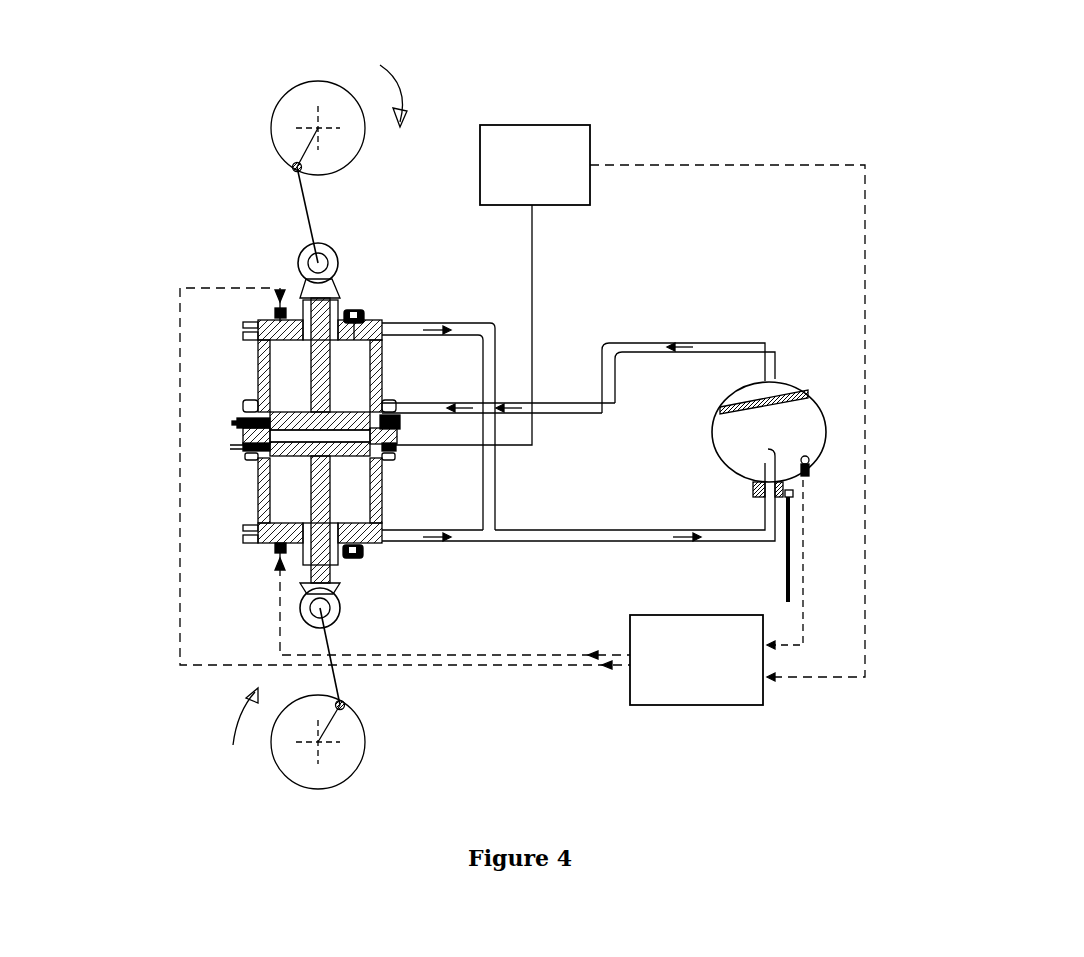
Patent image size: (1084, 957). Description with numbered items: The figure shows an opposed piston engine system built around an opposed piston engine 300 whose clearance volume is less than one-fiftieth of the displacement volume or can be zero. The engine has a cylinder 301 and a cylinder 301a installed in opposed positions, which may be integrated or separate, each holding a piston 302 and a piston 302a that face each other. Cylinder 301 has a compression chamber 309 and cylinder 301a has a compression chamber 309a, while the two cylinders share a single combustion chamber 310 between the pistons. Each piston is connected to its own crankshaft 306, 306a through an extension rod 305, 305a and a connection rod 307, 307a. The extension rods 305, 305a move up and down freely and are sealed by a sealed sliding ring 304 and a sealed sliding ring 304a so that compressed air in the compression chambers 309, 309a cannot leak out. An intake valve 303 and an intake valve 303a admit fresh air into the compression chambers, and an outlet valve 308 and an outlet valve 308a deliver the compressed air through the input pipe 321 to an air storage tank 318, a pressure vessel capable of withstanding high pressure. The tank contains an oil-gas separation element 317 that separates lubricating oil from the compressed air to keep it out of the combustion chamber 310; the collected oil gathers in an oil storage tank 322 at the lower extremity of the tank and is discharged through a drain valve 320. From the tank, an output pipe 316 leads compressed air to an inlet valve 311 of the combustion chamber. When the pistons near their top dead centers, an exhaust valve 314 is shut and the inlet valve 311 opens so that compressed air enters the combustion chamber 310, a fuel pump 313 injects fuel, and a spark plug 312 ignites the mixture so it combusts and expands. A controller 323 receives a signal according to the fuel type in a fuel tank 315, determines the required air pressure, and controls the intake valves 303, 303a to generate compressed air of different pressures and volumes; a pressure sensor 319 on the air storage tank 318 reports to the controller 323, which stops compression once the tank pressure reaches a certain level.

The opposed piston engine 300 is at (205, 230).
The cylinder 301 is at (424, 405).
The cylinder 301a is at (175, 359).
The piston 302 is at (229, 514).
The piston 302a is at (376, 402).
The intake valve 303 is at (185, 600).
The intake valve 303a is at (187, 286).
The sealed sliding ring 304 is at (384, 591).
The sealed sliding ring 304a is at (379, 243).
The extension rod 305 is at (216, 646).
The extension rod 305a is at (233, 204).
The crankshaft 306 is at (363, 738).
The crankshaft 306a is at (363, 104).
The connection rod 307 is at (402, 708).
The connection rod 307a is at (364, 171).
The outlet valve 308 is at (418, 569).
The outlet valve 308a is at (407, 286).
The compression chamber 309 is at (223, 566).
The compression chamber 309a is at (222, 350).
The combustion chamber 310 is at (226, 512).
The inlet valve 311 is at (417, 406).
The spark plug 312 is at (174, 470).
The fuel pump 313 is at (473, 462).
The exhaust valve 314 is at (174, 410).
The fuel tank 315 is at (526, 265).
The output pipe 316 is at (610, 346).
The oil-gas separation element 317 is at (824, 375).
The air storage tank 318 is at (830, 422).
The pressure sensor 319 is at (858, 552).
The drain valve 320 is at (859, 546).
The input pipe 321 is at (578, 515).
The oil storage tank 322 is at (715, 494).
The controller 323 is at (726, 454).